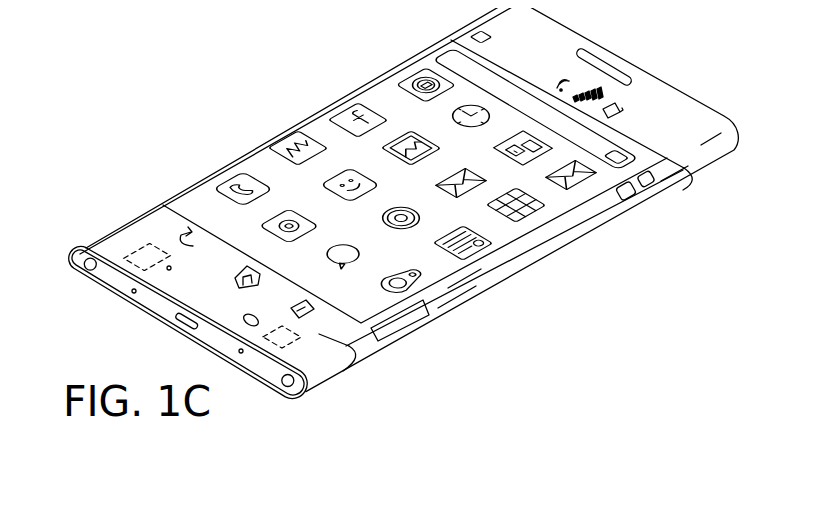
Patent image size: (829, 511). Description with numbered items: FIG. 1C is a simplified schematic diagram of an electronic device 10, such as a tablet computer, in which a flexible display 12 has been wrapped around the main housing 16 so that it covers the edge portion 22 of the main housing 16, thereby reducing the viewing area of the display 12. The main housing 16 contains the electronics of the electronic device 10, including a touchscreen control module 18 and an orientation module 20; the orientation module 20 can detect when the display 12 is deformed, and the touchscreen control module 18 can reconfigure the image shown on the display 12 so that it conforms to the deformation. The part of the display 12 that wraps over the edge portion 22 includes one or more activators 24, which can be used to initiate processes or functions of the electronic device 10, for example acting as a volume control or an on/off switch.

The electronic device 10 is at (238, 70).
The display 12 is at (193, 200).
The main housing 16 is at (656, 90).
The touchscreen control module 18 is at (130, 247).
The orientation module 20 is at (312, 338).
The edge portion 22 is at (551, 284).
The activators 24 is at (403, 322).